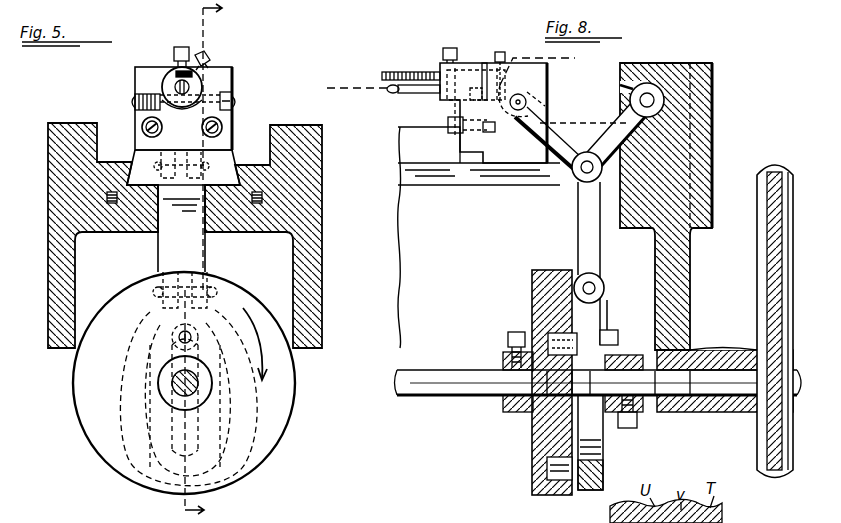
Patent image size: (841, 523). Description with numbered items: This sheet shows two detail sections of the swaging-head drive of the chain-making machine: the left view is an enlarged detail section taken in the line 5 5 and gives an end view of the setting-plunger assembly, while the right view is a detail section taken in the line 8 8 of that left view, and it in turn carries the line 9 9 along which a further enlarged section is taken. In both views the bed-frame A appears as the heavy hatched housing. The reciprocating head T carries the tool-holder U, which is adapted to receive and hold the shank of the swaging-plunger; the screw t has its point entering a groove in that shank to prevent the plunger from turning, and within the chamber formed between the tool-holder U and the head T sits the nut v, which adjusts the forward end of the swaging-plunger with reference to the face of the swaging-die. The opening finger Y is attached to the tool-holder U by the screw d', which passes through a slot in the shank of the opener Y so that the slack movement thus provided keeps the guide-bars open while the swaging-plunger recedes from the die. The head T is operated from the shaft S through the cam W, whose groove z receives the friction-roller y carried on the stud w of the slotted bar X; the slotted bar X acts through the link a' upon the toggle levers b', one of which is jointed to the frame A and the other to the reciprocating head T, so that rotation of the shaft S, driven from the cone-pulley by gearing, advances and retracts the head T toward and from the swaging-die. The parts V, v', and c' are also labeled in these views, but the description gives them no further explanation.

In FIG. 5, the bed-frame A is at (308, 209).
In FIG. 8, the bed-frame A is at (712, 126).
In FIG. 5, the reciprocating head T is at (233, 73).
In FIG. 8, the reciprocating head T is at (555, 81).
In FIG. 5, the screw t is at (181, 45).
In FIG. 8, the screw t is at (506, 68).
In FIG. 8, the tool-holder U is at (470, 66).
In FIG. 5, the ribbed adjusting piece V is at (145, 72).
In FIG. 8, the nut v is at (488, 71).
In FIG. 8, the adjusting rod v' is at (446, 109).
In FIG. 5, the opening finger Y is at (173, 68).
In FIG. 8, the opening finger Y is at (402, 72).
In FIG. 5, the screw d' is at (213, 51).
In FIG. 8, the screw d' is at (450, 42).
In FIG. 8, the pointer tip c' is at (384, 97).
In FIG. 5, the link a' is at (187, 246).
In FIG. 8, the link a' is at (581, 263).
In FIG. 8, the toggle levers b' is at (581, 131).
In FIG. 5, the cam W is at (293, 386).
In FIG. 8, the cam W is at (532, 302).
In FIG. 5, the section line 5 5 is at (172, 381).
In FIG. 5, the groove z is at (240, 420).
In FIG. 8, the groove z is at (560, 470).
In FIG. 8, the shaft S is at (450, 376).
In FIG. 8, the slotted bar X is at (592, 450).
In FIG. 8, the friction-roller y is at (572, 338).
In FIG. 8, the stud w is at (602, 328).
In FIG. 5, the section line 8 8 is at (196, 261).
In FIG. 8, the section line 9 9 is at (450, 73).